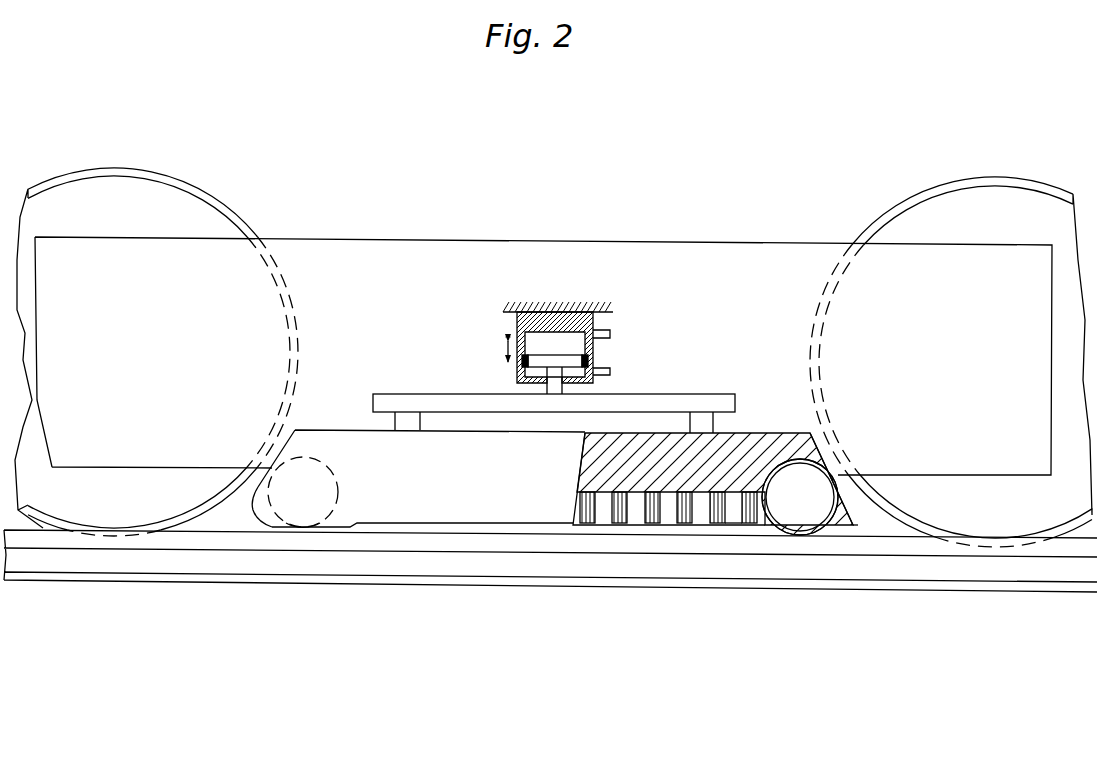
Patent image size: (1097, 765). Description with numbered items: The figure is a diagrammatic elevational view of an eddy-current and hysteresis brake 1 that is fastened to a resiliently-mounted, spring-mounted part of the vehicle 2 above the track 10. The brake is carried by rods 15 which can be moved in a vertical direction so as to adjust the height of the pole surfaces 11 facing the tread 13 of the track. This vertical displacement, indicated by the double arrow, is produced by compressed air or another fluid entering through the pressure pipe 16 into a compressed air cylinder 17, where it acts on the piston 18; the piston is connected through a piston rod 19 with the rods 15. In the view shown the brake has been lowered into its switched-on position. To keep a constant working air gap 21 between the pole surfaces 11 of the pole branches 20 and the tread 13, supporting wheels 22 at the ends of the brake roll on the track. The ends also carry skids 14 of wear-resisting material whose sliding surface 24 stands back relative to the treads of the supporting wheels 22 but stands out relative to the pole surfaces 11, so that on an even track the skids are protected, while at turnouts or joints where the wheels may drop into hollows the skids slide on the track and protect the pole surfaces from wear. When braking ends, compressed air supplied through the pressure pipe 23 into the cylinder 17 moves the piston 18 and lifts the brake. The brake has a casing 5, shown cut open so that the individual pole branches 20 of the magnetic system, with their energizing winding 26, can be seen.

The eddy-current and hysteresis brake 1 is at (334, 428).
The vehicle 2 is at (784, 272).
The casing 5 is at (452, 500).
The track 10 is at (985, 573).
The pole surfaces 11 is at (730, 531).
The tread of the track 13 is at (882, 518).
The skids 14 is at (265, 515).
The rods 15 is at (704, 405).
The pressure pipe 16 is at (605, 332).
The compressed air cylinder 17 is at (562, 312).
The piston 18 is at (540, 360).
The piston rod 19 is at (548, 390).
The pole branches 20 is at (667, 524).
The working air gap 21 is at (602, 526).
The supporting wheels 22 is at (806, 520).
The pressure pipe 23 is at (607, 370).
The sliding surface 24 is at (328, 533).
The energizing winding 26 is at (743, 524).